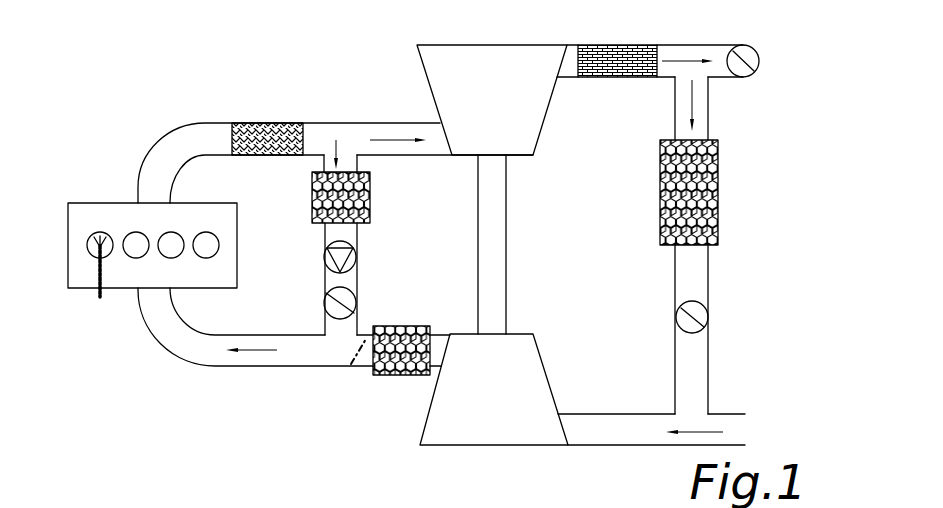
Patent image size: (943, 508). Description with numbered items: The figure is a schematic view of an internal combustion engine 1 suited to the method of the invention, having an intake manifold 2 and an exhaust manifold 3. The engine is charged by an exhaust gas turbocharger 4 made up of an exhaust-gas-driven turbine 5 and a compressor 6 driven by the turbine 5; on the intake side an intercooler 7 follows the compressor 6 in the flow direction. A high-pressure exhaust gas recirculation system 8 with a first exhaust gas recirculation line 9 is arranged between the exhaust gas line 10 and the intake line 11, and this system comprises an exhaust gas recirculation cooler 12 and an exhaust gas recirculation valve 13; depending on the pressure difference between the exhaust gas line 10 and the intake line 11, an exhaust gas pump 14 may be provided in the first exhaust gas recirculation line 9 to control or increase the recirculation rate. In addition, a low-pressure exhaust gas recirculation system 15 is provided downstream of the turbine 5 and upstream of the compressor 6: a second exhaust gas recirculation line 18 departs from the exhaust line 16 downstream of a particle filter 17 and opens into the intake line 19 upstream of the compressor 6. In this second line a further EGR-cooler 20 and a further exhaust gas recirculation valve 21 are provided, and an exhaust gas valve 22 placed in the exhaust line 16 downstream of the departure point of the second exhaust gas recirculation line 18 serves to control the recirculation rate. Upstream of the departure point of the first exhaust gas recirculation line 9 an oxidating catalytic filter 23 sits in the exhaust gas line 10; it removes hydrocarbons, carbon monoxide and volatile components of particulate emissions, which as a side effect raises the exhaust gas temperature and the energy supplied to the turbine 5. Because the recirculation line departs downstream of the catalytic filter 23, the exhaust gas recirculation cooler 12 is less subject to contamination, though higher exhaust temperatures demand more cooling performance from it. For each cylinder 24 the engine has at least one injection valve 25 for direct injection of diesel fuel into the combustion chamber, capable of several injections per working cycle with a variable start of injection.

The internal combustion engine 1 is at (68, 238).
The intake manifold 2 is at (163, 336).
The exhaust manifold 3 is at (204, 123).
The exhaust gas turbocharger 4 is at (489, 163).
The turbine 5 is at (538, 55).
The compressor 6 is at (483, 436).
The intercooler 7 is at (413, 372).
The high-pressure exhaust gas recirculation system 8 is at (312, 236).
The first exhaust gas recirculation line 9 is at (327, 249).
The exhaust gas line 10 is at (318, 123).
The intake line 11 is at (313, 358).
The exhaust gas recirculation cooler 12 is at (339, 172).
The exhaust gas recirculation valve 13 is at (342, 319).
The exhaust gas pump 14 is at (325, 285).
The low-pressure exhaust gas recirculation system 15 is at (720, 266).
The exhaust line 16 is at (689, 45).
The particle filter 17 is at (640, 48).
The second exhaust gas recirculation line 18 is at (708, 124).
The intake line 19 is at (618, 436).
The further EGR-cooler 20 is at (718, 200).
The further exhaust gas recirculation valve 21 is at (708, 317).
The exhaust gas valve 22 is at (759, 61).
The oxidating catalytic filter 23 is at (267, 123).
The cylinder 24 is at (127, 233).
The injection valve 25 is at (100, 277).